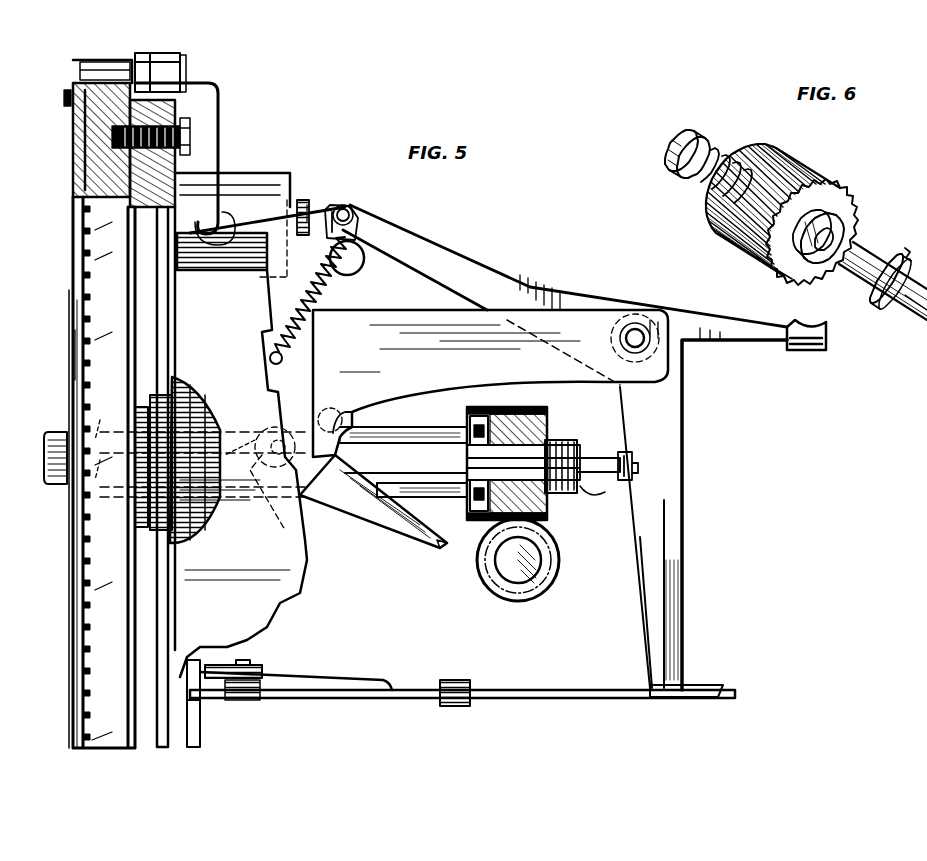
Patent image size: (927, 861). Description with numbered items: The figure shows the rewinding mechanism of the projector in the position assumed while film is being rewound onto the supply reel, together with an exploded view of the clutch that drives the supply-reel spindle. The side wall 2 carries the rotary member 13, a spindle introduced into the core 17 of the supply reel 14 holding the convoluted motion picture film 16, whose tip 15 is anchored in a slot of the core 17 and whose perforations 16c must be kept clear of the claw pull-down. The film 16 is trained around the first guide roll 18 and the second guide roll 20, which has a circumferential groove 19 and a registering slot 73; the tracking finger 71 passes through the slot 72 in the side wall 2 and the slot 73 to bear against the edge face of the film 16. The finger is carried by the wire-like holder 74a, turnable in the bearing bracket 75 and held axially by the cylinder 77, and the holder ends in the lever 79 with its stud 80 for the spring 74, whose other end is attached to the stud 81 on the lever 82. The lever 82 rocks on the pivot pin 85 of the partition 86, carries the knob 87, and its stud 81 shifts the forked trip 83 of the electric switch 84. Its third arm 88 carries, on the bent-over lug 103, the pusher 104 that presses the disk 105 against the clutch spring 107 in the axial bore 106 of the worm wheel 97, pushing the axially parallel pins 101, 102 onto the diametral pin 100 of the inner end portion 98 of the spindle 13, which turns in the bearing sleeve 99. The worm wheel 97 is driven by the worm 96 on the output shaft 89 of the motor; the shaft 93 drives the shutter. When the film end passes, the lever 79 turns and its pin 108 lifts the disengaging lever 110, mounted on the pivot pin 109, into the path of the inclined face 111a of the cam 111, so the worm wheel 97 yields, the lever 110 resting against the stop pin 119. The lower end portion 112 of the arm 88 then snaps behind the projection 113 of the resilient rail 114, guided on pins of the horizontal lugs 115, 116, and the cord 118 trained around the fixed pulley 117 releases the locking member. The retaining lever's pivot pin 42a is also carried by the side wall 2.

In FIG. 5, the side wall 2 is at (168, 595).
In FIG. 5, the rotary member 13 is at (48, 458).
In FIG. 6, the rotary member 13 is at (920, 318).
In FIG. 5, the supply reel 14 is at (69, 612).
In FIG. 5, the tip 15 is at (100, 432).
In FIG. 5, the motion picture film 16 is at (117, 62).
In FIG. 5, the perforations 16c is at (73, 572).
In FIG. 5, the core 17 is at (72, 372).
In FIG. 5, the first guide roll 18 is at (64, 97).
In FIG. 5, the circumferential groove 19 is at (92, 62).
In FIG. 5, the second guide roll 20 is at (73, 160).
In FIG. 5, the pivot pin 42a is at (190, 128).
In FIG. 5, the tracking finger 71 is at (146, 53).
In FIG. 5, the slot 72 is at (210, 83).
In FIG. 5, the registering slot 73 is at (180, 55).
In FIG. 5, the spring 74 is at (340, 280).
In FIG. 5, the wire-like holder 74a is at (220, 152).
In FIG. 5, the bearing bracket 75 is at (182, 270).
In FIG. 5, the cylinder 77 is at (228, 270).
In FIG. 5, the lever 79 is at (300, 360).
In FIG. 5, the stud 80 is at (270, 358).
In FIG. 5, the stud 81 is at (352, 212).
In FIG. 5, the lever 82 is at (430, 262).
In FIG. 5, the forked trip 83 is at (340, 205).
In FIG. 5, the electric switch 84 is at (300, 200).
In FIG. 5, the pivot pin 85 is at (636, 328).
In FIG. 5, the partition 86 is at (568, 310).
In FIG. 5, the knob 87 is at (805, 350).
In FIG. 5, the third arm 88 is at (672, 515).
In FIG. 5, the output shaft 89 is at (510, 570).
In FIG. 5, the shaft 93 is at (540, 495).
In FIG. 5, the worm 96 is at (556, 580).
In FIG. 5, the worm wheel 97 is at (530, 445).
In FIG. 6, the worm wheel 97 is at (795, 158).
In FIG. 6, the inner end portion 98 is at (872, 256).
In FIG. 5, the bearing sleeve 99 is at (405, 427).
In FIG. 5, the diametral pin 100 is at (467, 412).
In FIG. 5, the axially parallel pin 101 is at (488, 416).
In FIG. 6, the axially parallel pin 101 is at (843, 200).
In FIG. 5, the axially parallel pin 102 is at (460, 490).
In FIG. 6, the axially parallel pin 102 is at (772, 268).
In FIG. 5, the bent-over lug 103 is at (648, 472).
In FIG. 5, the pusher 104 is at (600, 458).
In FIG. 5, the disk 105 is at (574, 440).
In FIG. 6, the disk 105 is at (676, 140).
In FIG. 5, the axial bore 106 is at (556, 420).
In FIG. 6, the axial bore 106 is at (870, 286).
In FIG. 5, the clutch spring 107 is at (620, 484).
In FIG. 6, the clutch spring 107 is at (732, 162).
In FIG. 5, the pin 108 is at (272, 500).
In FIG. 5, the pivot pin 109 is at (268, 455).
In FIG. 5, the disengaging lever 110 is at (360, 505).
In FIG. 5, the cam 111 is at (460, 515).
In FIG. 5, the inclined face 111a is at (437, 543).
In FIG. 5, the lower end portion 112 is at (652, 650).
In FIG. 5, the projection 113 is at (705, 685).
In FIG. 5, the resilient rail 114 is at (618, 698).
In FIG. 5, the horizontal lug 115 is at (470, 700).
In FIG. 5, the horizontal lug 116 is at (265, 700).
In FIG. 5, the fixed pulley 117 is at (256, 668).
In FIG. 5, the cord 118 is at (354, 674).
In FIG. 5, the stop pin 119 is at (352, 412).